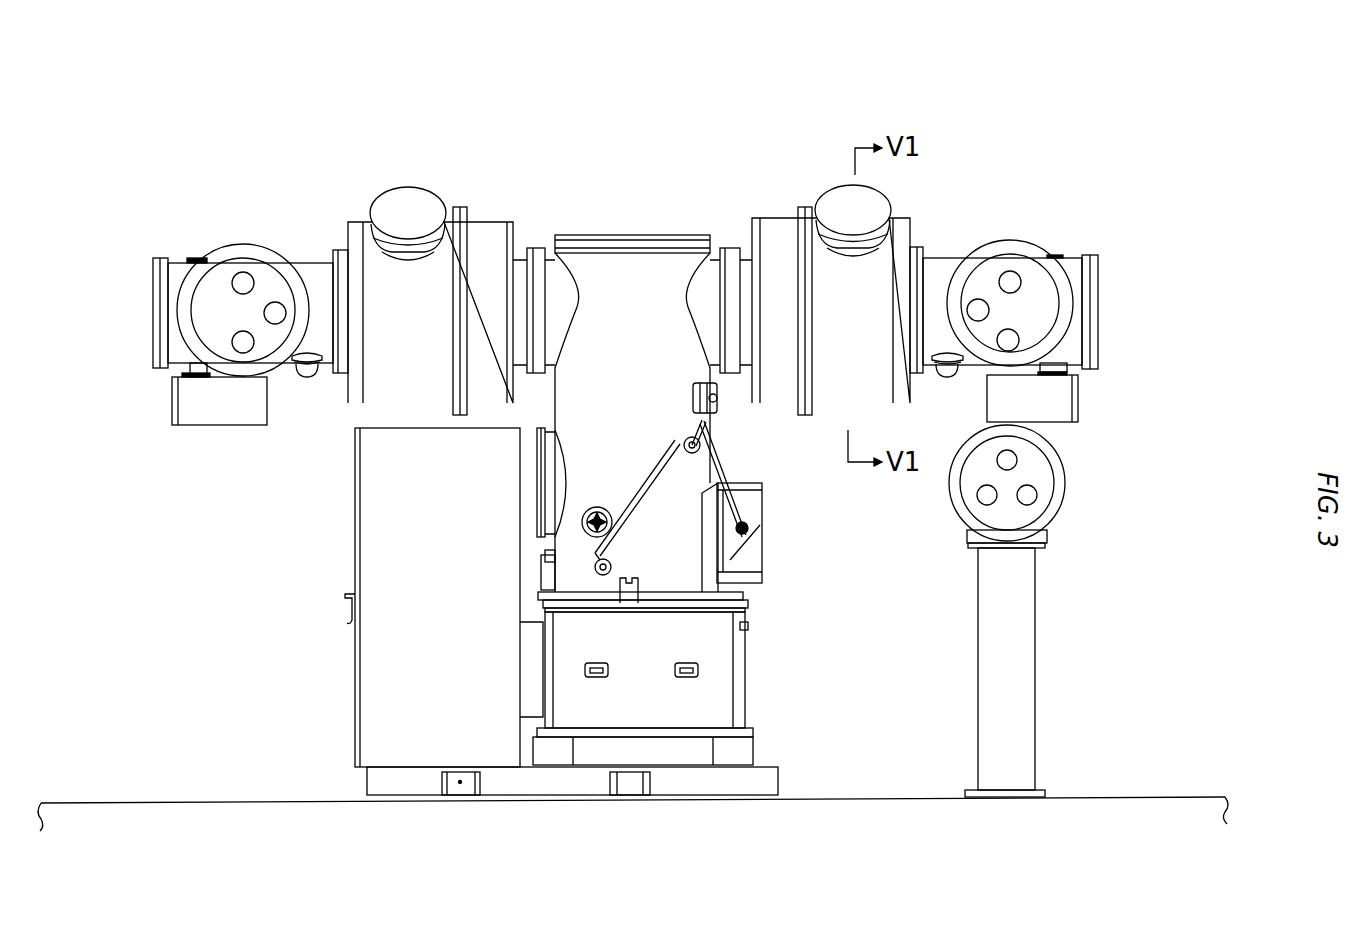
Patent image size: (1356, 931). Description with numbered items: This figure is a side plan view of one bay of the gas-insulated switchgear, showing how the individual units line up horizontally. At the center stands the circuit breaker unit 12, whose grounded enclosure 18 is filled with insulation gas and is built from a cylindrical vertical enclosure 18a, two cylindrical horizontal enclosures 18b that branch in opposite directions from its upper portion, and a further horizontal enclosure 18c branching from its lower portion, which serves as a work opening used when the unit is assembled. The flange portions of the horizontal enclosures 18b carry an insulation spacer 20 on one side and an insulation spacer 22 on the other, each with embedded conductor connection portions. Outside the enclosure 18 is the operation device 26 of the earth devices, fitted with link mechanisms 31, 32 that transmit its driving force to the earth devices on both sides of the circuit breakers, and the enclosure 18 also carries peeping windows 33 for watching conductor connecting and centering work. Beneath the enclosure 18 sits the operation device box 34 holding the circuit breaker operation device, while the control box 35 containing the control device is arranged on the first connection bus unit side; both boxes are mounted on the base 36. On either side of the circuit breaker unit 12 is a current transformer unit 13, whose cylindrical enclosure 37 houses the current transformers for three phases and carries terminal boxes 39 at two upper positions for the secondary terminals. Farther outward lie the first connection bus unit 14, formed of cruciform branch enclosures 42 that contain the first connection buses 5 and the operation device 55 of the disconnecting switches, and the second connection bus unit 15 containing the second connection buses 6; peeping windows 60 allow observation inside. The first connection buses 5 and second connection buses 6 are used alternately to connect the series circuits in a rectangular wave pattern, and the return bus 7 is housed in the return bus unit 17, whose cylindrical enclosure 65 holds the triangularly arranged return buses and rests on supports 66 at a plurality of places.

The first connection bus 5 is at (243, 331).
The second connection bus 6 is at (1013, 330).
The return bus 7 is at (1027, 462).
The circuit breaker unit 12 is at (625, 235).
The current transformer unit 13 is at (487, 222).
The first connection bus unit 14 is at (318, 262).
The second connection bus unit 15 is at (948, 258).
The return bus unit 17 is at (1067, 487).
The enclosure 18 is at (683, 235).
The vertical enclosure 18a is at (714, 419).
The horizontal enclosure 18b is at (553, 270).
The horizontal enclosure 18c is at (555, 443).
The insulation spacer 20 is at (738, 250).
The insulation spacer 22 is at (535, 250).
The operation device 26 is at (765, 550).
The link mechanism 31 is at (628, 500).
The link mechanism 32 is at (724, 478).
The peeping window 33 is at (692, 390).
The operation device box 34 is at (745, 652).
The control box 35 is at (355, 545).
The base 36 is at (778, 771).
The cylindrical enclosure 37 is at (503, 233).
The terminal box 39 is at (405, 190).
The cruciform branch enclosure 42 is at (162, 262).
The operation device 55 is at (215, 425).
The peeping window 60 is at (305, 378).
The cylindrical enclosure 65 is at (957, 507).
The support 66 is at (1036, 676).